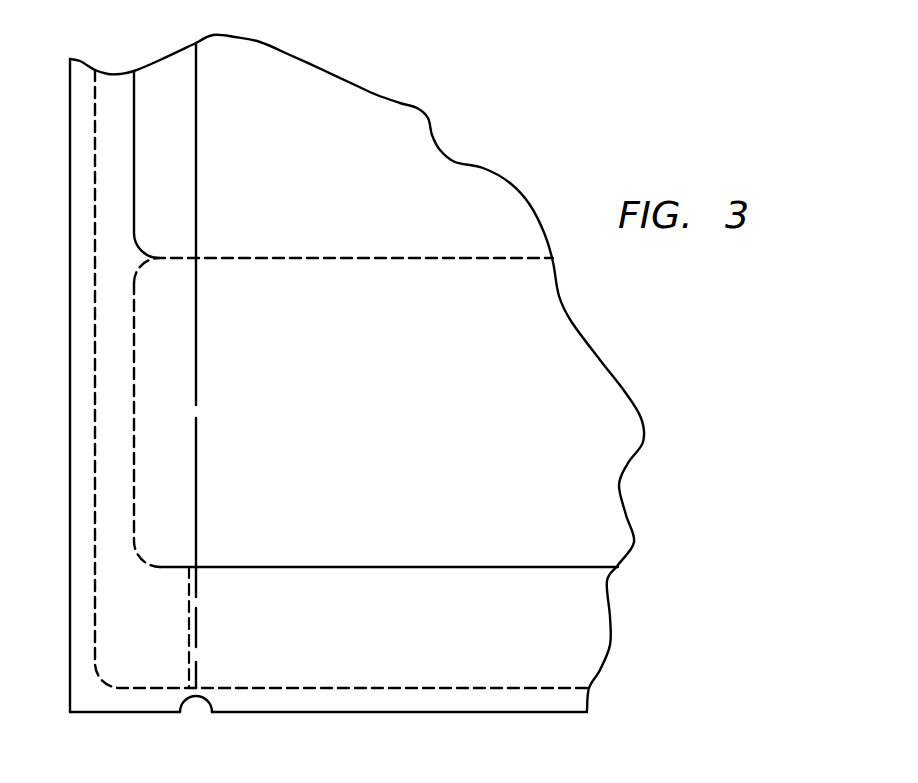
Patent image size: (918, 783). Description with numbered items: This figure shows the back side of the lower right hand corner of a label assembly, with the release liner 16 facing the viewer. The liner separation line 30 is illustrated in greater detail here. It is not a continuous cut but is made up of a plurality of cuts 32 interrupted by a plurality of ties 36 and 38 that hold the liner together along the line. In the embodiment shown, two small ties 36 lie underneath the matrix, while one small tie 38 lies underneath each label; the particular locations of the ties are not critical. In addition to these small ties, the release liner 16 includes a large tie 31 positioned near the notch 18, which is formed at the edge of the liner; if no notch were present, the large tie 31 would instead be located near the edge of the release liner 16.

The liner separation line 30 is at (212, 217).
The small tie 38 is at (198, 412).
The cuts 32 is at (194, 625).
The small ties 36 is at (197, 601).
The large tie 31 is at (185, 693).
The notch 18 is at (190, 700).
The release liner 16 is at (368, 702).